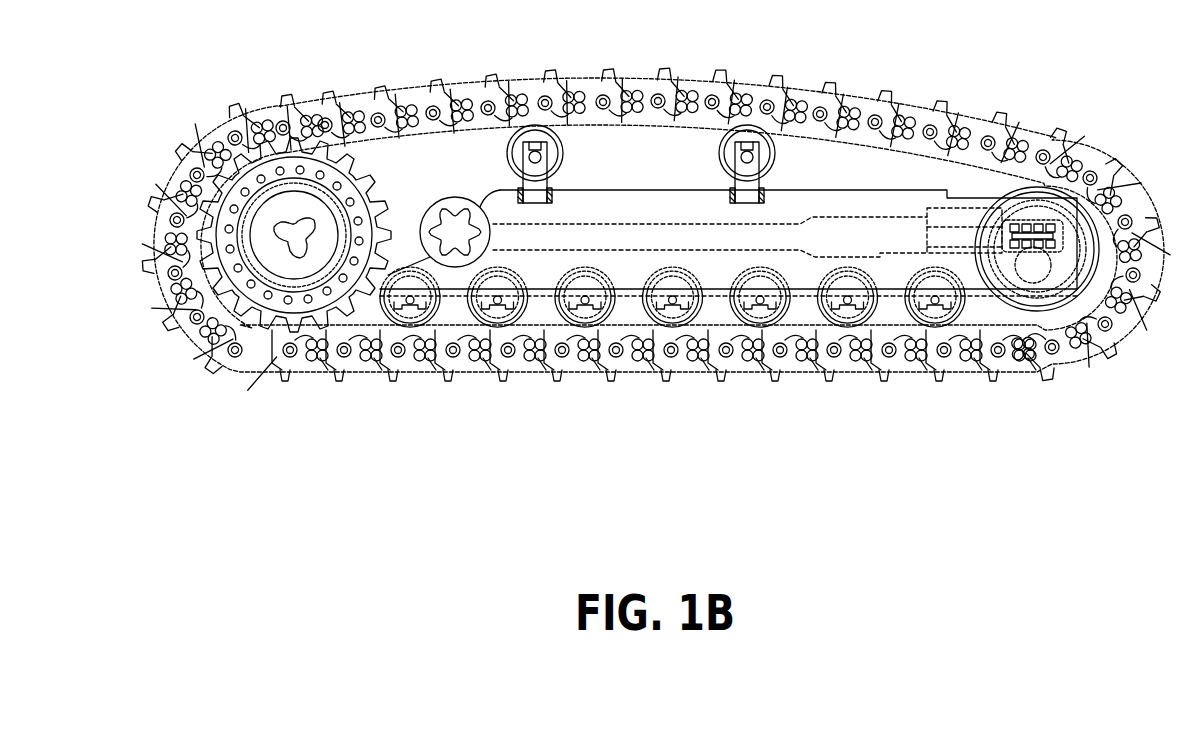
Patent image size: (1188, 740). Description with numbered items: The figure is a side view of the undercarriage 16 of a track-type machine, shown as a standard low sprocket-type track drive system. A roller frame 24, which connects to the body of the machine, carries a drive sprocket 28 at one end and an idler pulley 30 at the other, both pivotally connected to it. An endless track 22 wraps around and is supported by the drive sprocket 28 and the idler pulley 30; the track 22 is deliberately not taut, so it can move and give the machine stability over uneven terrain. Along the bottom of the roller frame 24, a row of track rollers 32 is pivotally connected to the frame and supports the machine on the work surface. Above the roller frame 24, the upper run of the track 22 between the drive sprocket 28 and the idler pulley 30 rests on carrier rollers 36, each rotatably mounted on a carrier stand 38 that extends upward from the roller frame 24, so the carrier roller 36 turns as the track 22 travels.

The undercarriage 16 is at (636, 225).
The track 22 is at (182, 184).
The roller frame 24 is at (627, 262).
The drive sprocket 28 is at (277, 273).
The idler pulley 30 is at (997, 197).
The track rollers 32 is at (840, 328).
The carrier roller 36 is at (746, 130).
The carrier stand 38 is at (747, 187).